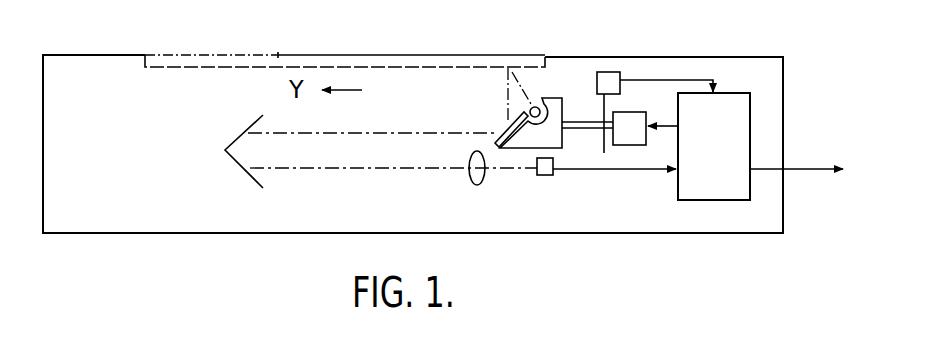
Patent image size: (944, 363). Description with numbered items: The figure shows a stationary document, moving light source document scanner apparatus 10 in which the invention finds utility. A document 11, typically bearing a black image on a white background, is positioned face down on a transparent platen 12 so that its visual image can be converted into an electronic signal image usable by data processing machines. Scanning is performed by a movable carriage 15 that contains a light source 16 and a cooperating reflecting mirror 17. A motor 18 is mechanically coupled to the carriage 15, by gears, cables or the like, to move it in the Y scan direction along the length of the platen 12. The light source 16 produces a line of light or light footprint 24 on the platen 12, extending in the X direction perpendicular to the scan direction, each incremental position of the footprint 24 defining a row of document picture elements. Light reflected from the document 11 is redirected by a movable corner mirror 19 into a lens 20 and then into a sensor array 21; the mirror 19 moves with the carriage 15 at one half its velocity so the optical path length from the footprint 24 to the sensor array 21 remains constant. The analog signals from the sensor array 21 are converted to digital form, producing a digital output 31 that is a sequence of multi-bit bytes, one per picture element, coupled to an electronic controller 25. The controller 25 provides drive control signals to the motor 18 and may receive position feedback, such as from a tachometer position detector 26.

The document scanner apparatus 10 is at (175, 44).
The document 11 is at (301, 54).
The transparent platen 12 is at (205, 56).
The movable carriage 15 is at (562, 112).
The light source 16 is at (537, 104).
The reflecting mirror 17 is at (500, 126).
The motor 18 is at (637, 111).
The movable corner mirror 19 is at (242, 172).
The lens 20 is at (476, 178).
The sensor array 21 is at (544, 177).
The light footprint 24 is at (509, 66).
The electronic controller 25 is at (735, 134).
The tachometer position detector 26 is at (617, 72).
The digital output 31 is at (622, 170).